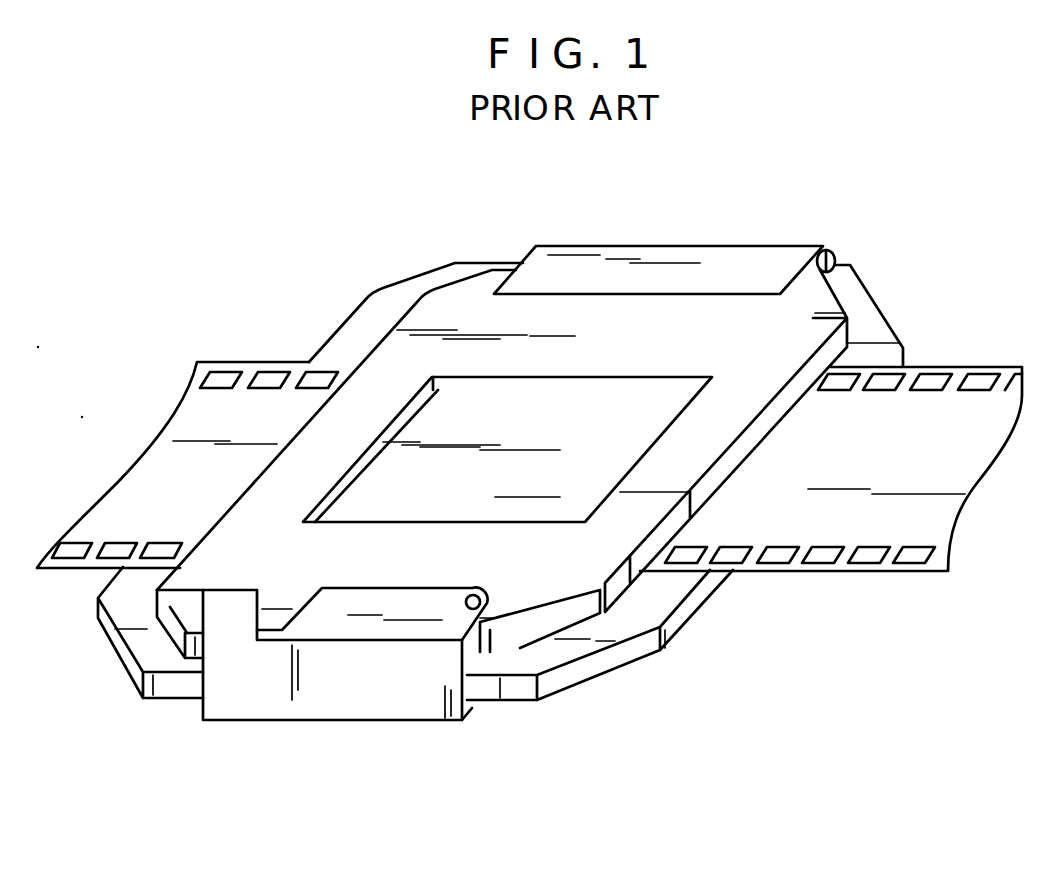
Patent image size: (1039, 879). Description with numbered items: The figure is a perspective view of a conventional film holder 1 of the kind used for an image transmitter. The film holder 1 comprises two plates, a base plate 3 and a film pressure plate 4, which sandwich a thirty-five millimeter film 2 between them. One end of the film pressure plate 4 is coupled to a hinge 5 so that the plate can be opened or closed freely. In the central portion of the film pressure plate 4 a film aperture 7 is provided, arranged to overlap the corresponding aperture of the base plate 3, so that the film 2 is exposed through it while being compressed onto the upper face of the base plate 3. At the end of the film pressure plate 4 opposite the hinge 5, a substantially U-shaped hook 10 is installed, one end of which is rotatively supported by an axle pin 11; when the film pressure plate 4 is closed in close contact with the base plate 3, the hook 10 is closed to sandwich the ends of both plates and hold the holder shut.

The film holder 1 is at (889, 247).
The film 2 is at (988, 366).
The base plate 3 is at (605, 662).
The film pressure plate 4 is at (620, 583).
The hinge 5 is at (832, 250).
The film aperture 7 is at (410, 403).
The hook 10 is at (413, 712).
The axle pin 11 is at (486, 596).